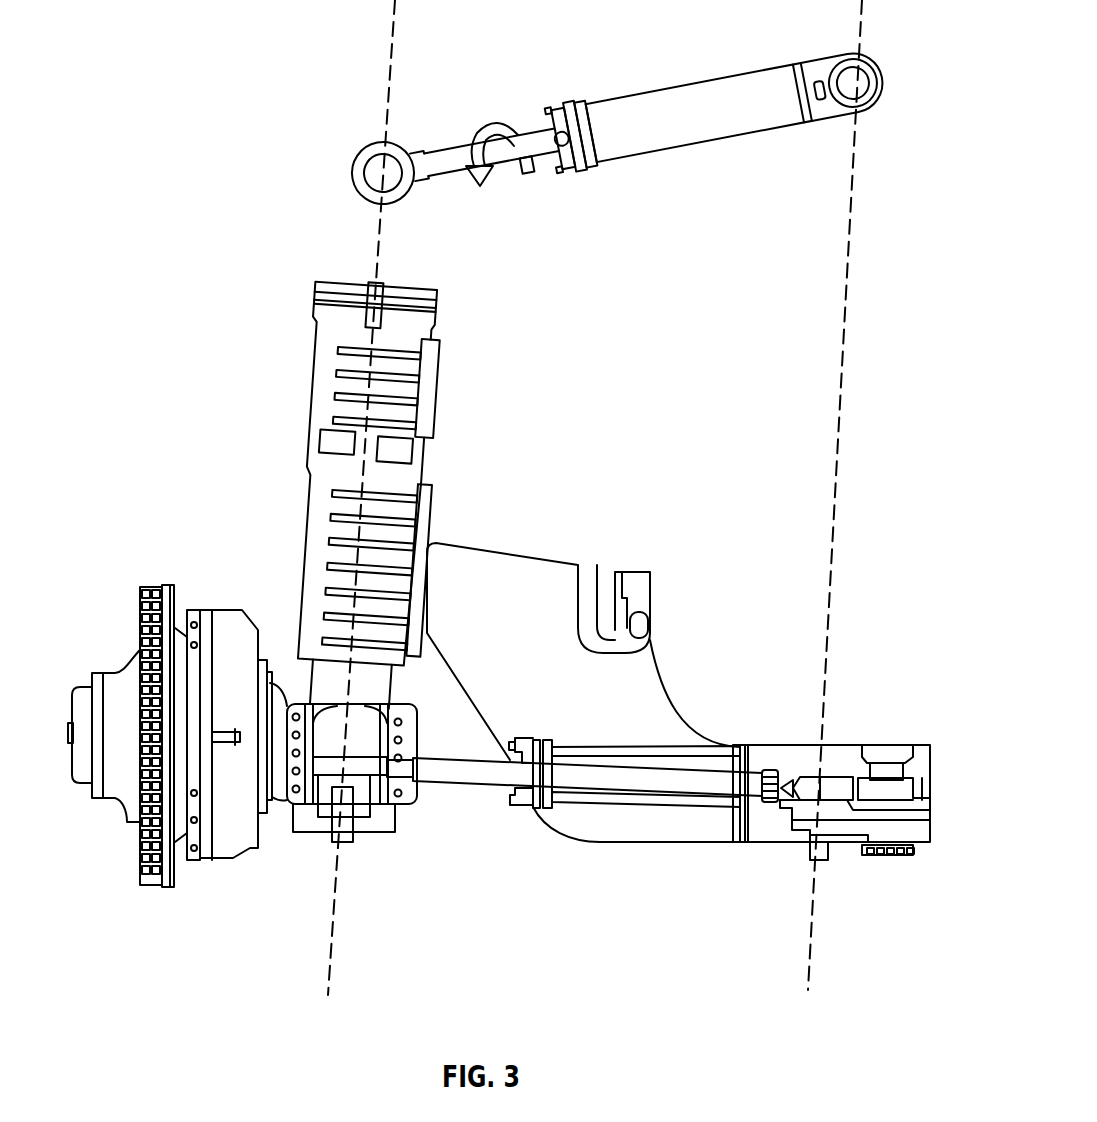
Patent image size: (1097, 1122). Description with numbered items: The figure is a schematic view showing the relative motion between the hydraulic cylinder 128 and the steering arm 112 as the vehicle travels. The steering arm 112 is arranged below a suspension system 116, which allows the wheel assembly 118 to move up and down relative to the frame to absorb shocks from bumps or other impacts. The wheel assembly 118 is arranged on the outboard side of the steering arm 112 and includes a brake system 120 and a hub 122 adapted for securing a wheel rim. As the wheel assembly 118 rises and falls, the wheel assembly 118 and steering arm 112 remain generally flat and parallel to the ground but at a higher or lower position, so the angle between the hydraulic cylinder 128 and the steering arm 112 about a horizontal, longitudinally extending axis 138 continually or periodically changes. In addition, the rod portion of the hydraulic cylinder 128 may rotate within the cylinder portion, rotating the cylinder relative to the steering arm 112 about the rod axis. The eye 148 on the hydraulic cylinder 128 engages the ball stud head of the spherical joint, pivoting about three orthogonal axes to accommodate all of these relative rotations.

The steering arm 112 is at (325, 798).
The suspension system 116 is at (313, 413).
The wheel assembly 118 is at (170, 742).
The brake system 120 is at (217, 600).
The hub 122 is at (122, 807).
The hydraulic cylinder 128 is at (695, 128).
The horizontal and longitudinally extending axis 138 is at (343, 768).
The eye 148 is at (353, 161).